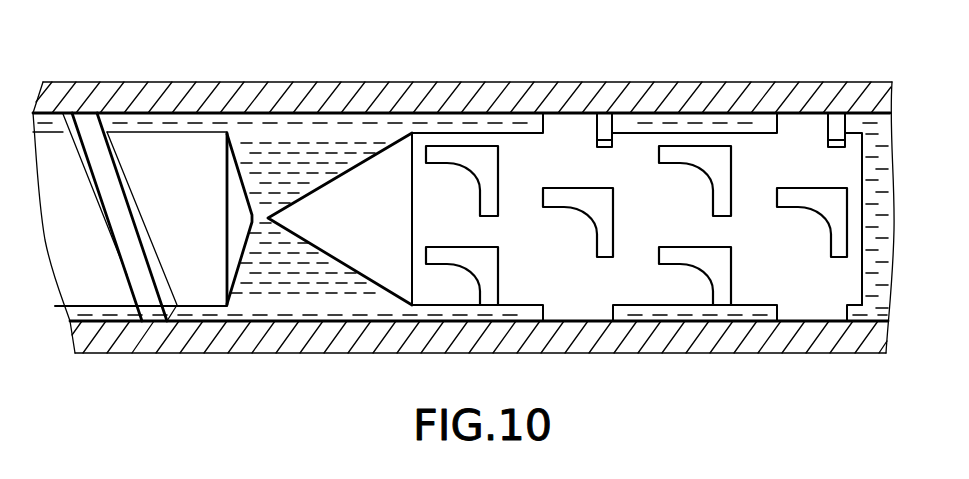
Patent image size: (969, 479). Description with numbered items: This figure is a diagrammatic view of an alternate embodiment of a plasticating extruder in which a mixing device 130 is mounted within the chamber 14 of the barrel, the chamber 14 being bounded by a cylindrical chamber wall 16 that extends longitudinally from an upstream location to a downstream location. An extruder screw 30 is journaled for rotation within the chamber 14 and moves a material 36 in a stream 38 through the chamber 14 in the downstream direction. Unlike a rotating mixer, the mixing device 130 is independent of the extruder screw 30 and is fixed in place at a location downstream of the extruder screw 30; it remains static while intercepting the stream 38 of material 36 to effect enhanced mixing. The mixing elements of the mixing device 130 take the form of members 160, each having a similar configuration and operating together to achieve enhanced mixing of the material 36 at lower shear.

The chamber 14 is at (260, 316).
The cylindrical chamber wall 16 is at (423, 87).
The extruder screw 30 is at (143, 168).
The material 36 is at (206, 128).
The stream 38 is at (312, 127).
The mixing device 130 is at (700, 142).
The members 160 is at (443, 163).